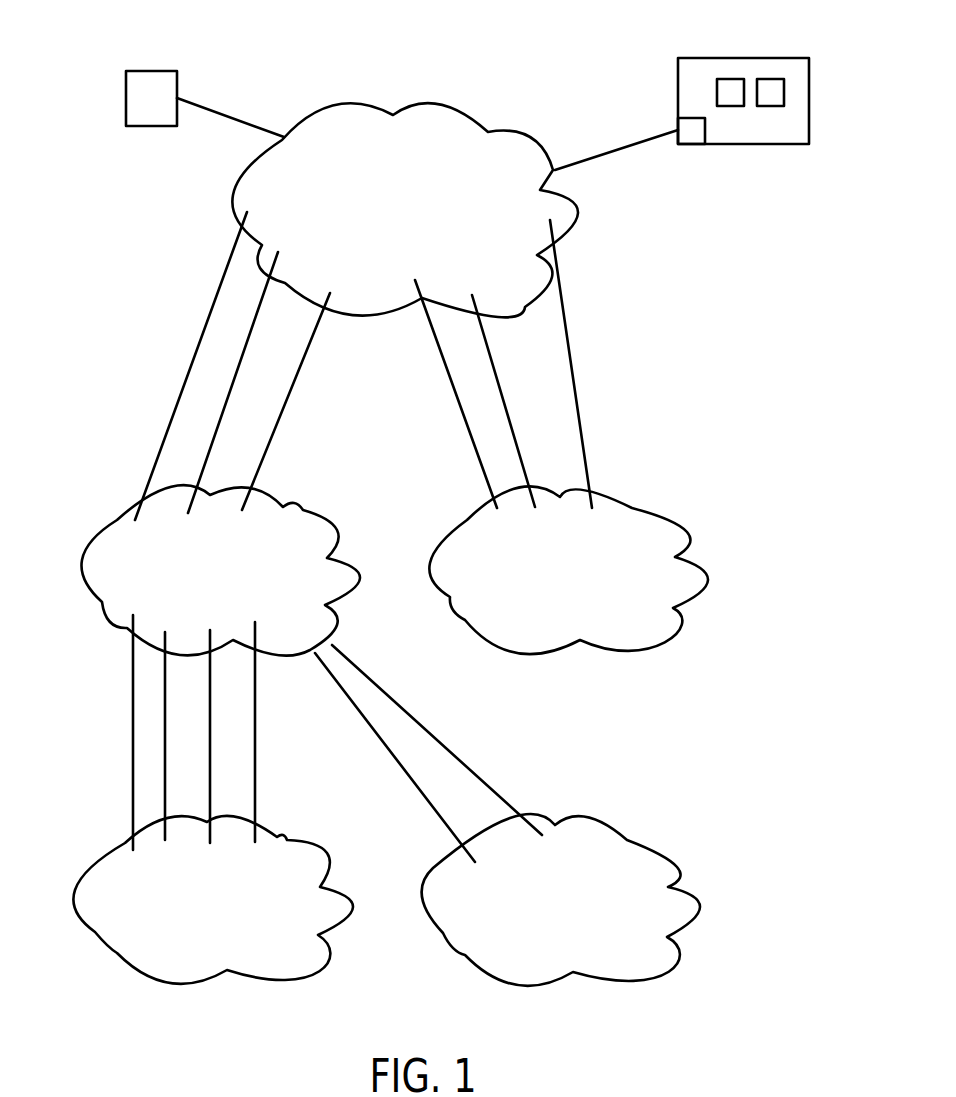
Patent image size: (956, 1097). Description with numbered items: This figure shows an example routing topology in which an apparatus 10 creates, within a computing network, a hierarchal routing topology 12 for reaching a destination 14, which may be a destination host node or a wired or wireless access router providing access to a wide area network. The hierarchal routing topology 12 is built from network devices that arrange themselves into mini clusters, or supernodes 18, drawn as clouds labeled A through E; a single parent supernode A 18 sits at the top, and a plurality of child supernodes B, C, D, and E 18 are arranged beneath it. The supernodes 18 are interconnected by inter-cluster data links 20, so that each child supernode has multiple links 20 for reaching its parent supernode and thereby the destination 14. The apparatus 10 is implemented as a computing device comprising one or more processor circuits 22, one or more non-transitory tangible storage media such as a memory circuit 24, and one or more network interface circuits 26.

The apparatus 10 is at (682, 105).
The hierarchal routing topology 12 is at (627, 296).
The destination 14 is at (140, 110).
The supernode 18 is at (382, 106).
The inter-cluster data link 20 is at (200, 356).
The processor circuit 22 is at (724, 98).
The non-transitory tangible storage medium 24 is at (768, 87).
The network interface circuit 26 is at (692, 136).